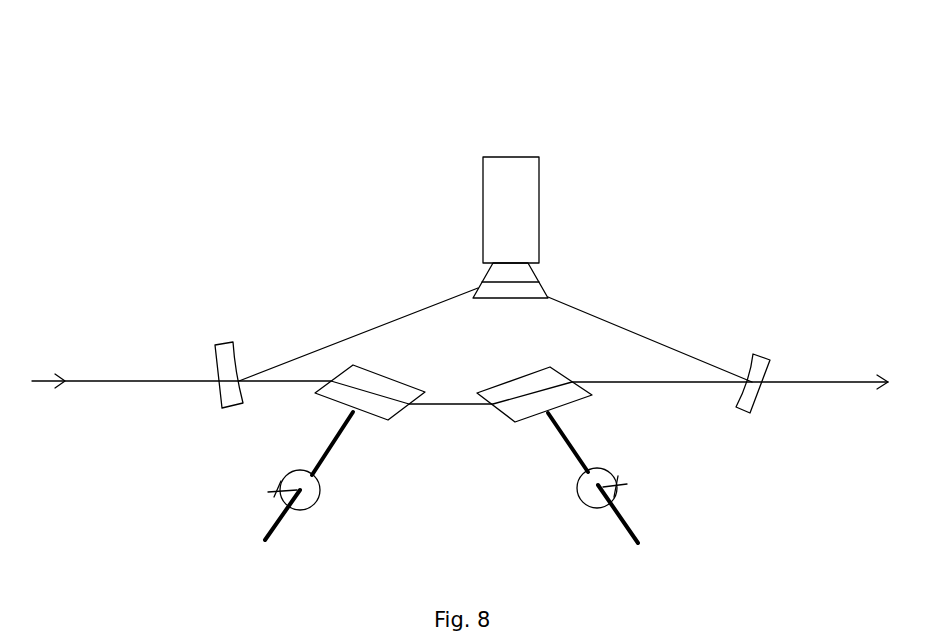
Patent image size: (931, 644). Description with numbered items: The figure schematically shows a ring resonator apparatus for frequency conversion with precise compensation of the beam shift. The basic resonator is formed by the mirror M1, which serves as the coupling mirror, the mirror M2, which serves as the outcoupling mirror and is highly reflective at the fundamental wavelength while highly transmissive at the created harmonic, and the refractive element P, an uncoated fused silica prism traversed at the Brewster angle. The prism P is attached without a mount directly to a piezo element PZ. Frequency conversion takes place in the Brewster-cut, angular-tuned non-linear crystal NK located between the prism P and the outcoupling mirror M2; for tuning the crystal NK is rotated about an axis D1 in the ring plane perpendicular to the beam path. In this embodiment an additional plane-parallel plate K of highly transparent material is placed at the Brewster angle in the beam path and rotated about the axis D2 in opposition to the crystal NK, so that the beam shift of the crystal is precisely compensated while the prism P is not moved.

The piezo element PZ is at (513, 157).
The refractive element (prism) P is at (486, 276).
The mirror M1 is at (214, 345).
The mirror M2 is at (771, 358).
The plane-parallel plate K is at (335, 400).
The non-linear crystal NK is at (573, 405).
The axis D1 is at (595, 492).
The axis D2 is at (299, 489).